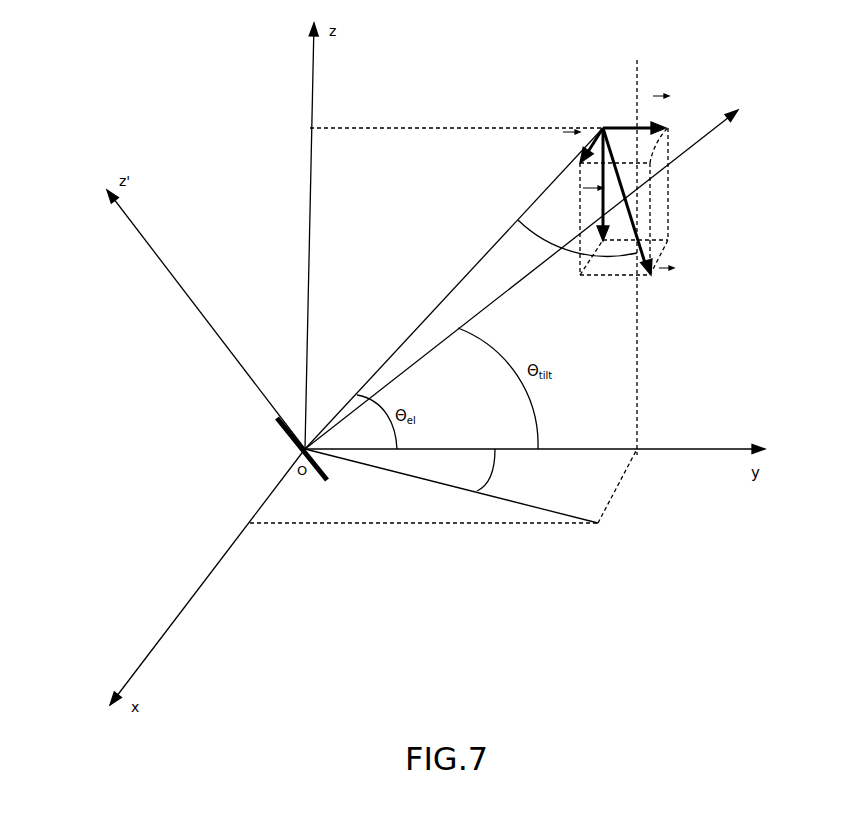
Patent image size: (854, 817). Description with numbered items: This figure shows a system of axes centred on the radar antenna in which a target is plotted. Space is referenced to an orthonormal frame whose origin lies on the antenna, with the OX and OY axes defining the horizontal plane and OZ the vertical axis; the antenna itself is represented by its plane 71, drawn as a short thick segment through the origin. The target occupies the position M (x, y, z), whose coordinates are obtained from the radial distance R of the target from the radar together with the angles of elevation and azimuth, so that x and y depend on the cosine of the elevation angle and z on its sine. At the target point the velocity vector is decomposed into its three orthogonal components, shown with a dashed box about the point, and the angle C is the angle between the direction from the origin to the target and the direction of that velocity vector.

The plane of the antenna 71 is at (285, 433).
The position of the target M is at (600, 127).
The radial distance of the target from the radar R is at (454, 288).
The angle between the target direction and the velocity vector C is at (521, 279).